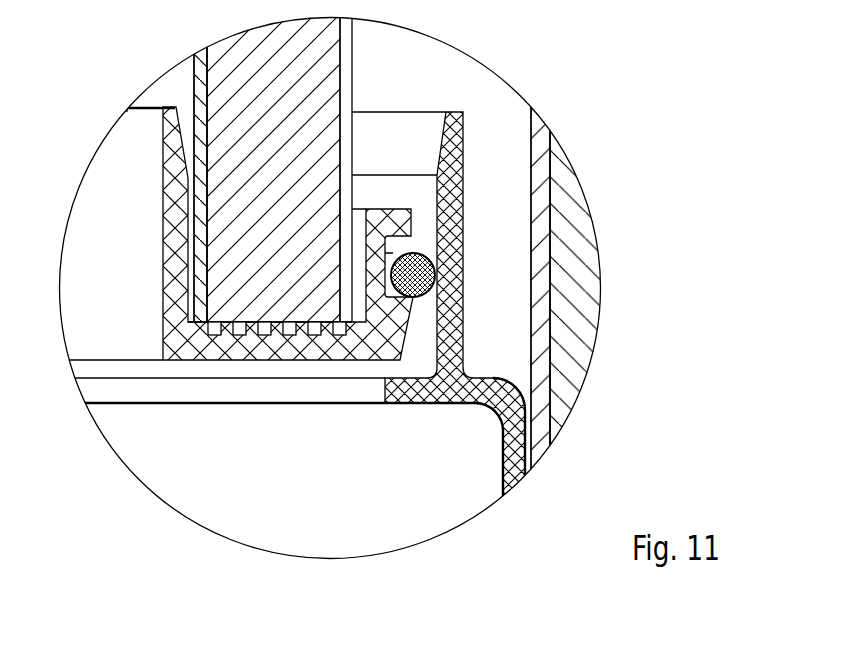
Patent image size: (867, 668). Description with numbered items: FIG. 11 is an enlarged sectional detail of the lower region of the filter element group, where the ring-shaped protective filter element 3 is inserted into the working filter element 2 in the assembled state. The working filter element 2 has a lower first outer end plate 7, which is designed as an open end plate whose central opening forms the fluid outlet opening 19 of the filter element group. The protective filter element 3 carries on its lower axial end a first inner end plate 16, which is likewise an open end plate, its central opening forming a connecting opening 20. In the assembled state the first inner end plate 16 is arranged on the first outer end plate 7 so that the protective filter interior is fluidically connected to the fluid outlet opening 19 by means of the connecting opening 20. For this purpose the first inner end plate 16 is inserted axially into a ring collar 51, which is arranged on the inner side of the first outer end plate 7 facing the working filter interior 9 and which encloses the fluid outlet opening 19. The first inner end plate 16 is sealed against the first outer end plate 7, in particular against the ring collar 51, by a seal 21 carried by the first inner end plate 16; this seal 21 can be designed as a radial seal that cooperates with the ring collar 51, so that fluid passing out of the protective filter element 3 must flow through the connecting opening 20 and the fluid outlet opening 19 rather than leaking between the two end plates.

The working filter element 2 is at (522, 128).
The protective filter element 3 is at (358, 56).
The first outer end plate 7 is at (545, 445).
The working filter interior 9 is at (393, 93).
The first inner end plate 16 is at (430, 219).
The fluid outlet opening 19 is at (503, 447).
The connecting opening 20 is at (150, 97).
The seal 21 is at (436, 275).
The ring collar 51 is at (463, 182).